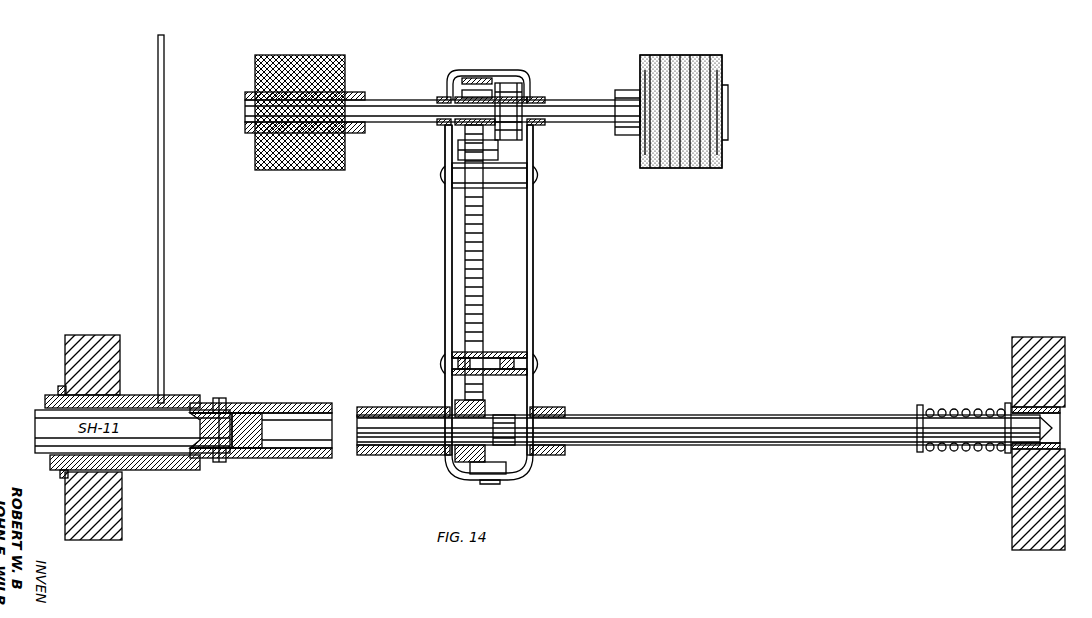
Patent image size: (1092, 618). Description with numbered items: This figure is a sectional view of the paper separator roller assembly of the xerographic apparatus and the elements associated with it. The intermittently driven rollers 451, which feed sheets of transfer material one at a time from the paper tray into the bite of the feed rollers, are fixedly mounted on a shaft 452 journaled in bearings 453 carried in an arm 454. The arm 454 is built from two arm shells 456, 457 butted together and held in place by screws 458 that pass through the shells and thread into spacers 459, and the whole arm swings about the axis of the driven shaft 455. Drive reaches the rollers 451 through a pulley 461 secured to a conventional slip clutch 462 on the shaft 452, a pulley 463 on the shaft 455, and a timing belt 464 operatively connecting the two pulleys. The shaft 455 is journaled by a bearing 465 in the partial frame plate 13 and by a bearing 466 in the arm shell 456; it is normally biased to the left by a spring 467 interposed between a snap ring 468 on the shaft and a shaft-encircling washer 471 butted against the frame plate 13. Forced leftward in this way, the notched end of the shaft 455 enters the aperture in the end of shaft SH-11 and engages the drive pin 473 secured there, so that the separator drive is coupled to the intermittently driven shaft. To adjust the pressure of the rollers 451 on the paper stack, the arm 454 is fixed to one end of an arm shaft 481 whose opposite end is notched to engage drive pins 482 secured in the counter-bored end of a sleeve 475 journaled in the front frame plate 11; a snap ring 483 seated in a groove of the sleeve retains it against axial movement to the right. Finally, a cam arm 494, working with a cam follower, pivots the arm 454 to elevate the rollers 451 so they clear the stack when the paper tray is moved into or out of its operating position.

The front plate 11 is at (118, 518).
The partial plate 13 is at (1020, 521).
The intermittently driven rollers 451 is at (297, 55).
The shaft 452 is at (388, 101).
The bearings 453 is at (440, 126).
The arm 454 is at (548, 251).
The driven shaft 455 is at (642, 418).
The arm shell 456 is at (534, 292).
The arm shell 457 is at (446, 302).
The screws 458 is at (542, 176).
The spacers 459 is at (507, 190).
The pulley 461 is at (452, 80).
The slip clutch 462 is at (526, 94).
The pulley 463 is at (494, 474).
The timing belt 464 is at (482, 262).
The bearing 465 is at (1016, 452).
The bearing 466 is at (544, 407).
The spring 467 is at (940, 451).
The snap ring 468 is at (916, 410).
The washer 471 is at (1008, 454).
The drive pin 473 is at (235, 407).
The sleeve 475 is at (158, 470).
The arm shaft 481 is at (305, 403).
The drive pins 482 is at (219, 398).
The snap ring 483 is at (60, 392).
The cam arm 494 is at (164, 70).